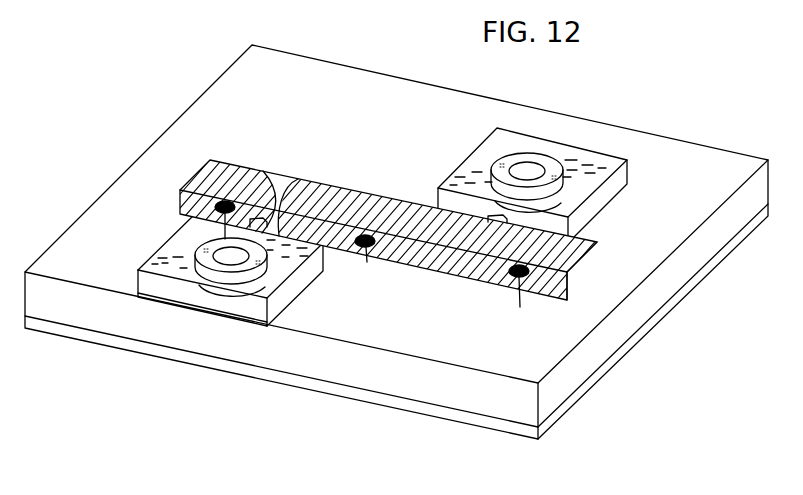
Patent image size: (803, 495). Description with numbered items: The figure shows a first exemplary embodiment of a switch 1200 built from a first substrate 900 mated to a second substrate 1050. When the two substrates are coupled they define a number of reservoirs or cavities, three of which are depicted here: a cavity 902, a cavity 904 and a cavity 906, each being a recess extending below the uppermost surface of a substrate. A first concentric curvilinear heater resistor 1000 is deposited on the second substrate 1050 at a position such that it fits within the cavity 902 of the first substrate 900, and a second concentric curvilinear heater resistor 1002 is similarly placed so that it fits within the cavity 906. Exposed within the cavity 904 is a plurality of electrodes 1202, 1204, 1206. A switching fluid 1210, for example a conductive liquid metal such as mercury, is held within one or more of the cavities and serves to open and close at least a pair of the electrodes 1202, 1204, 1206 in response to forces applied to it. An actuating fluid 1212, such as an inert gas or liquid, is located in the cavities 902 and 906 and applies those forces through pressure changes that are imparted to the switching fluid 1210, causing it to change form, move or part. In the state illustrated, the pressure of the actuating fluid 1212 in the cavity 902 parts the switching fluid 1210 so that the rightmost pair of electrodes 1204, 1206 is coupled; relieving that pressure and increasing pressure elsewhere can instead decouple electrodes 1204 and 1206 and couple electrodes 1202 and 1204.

The first substrate 900 is at (107, 189).
The cavity 902 is at (138, 270).
The cavity 904 is at (584, 283).
The cavity 906 is at (613, 200).
The first concentric curvilinear heater resistor 1000 is at (267, 266).
The second concentric curvilinear heater resistor 1002 is at (533, 153).
The second substrate 1050 is at (506, 438).
The switch 1200 is at (643, 69).
The electrode 1202 is at (225, 203).
The electrode 1204 is at (367, 262).
The electrode 1206 is at (520, 298).
The switching fluid 1210 is at (243, 170).
The actuating fluid 1212 is at (170, 258).